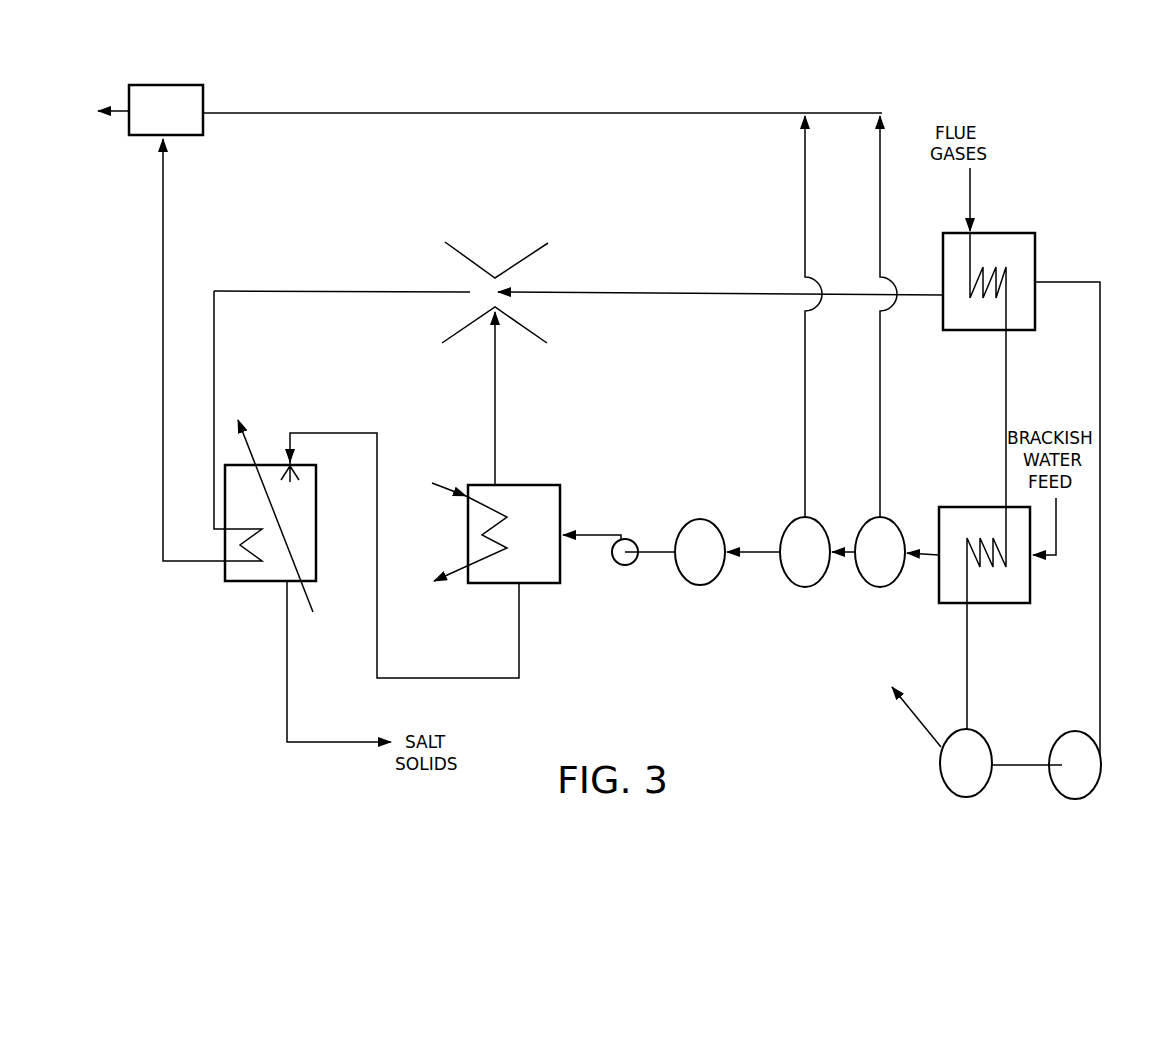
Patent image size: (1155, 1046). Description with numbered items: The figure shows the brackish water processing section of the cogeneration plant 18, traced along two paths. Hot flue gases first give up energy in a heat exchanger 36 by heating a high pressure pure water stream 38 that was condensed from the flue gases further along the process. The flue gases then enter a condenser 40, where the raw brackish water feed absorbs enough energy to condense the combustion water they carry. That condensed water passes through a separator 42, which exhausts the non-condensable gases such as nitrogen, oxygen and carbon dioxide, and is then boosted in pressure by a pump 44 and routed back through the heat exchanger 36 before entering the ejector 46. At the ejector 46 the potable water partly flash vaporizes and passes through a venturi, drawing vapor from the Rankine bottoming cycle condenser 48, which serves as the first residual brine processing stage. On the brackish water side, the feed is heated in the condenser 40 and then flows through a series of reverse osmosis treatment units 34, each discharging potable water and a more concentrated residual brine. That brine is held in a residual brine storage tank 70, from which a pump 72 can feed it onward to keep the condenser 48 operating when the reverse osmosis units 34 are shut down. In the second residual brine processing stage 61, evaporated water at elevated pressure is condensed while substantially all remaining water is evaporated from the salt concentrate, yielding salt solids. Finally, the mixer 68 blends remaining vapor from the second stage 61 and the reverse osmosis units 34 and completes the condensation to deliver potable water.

The cogeneration plant 18 is at (574, 107).
The reverse osmosis treatment units 34 is at (876, 571).
The heat exchanger 36 is at (1026, 248).
The high pressure pure water stream 38 is at (1086, 276).
The condenser 40 is at (1003, 595).
The separator 42 is at (973, 745).
The pump 44 is at (1090, 772).
The ejector 46 is at (510, 232).
The Rankine bottoming cycle condenser 48 is at (525, 498).
The second residual brine processing stage 61 is at (303, 518).
The mixer 68 is at (205, 100).
The residual brine storage tank 70 is at (703, 567).
The pump 72 is at (630, 567).